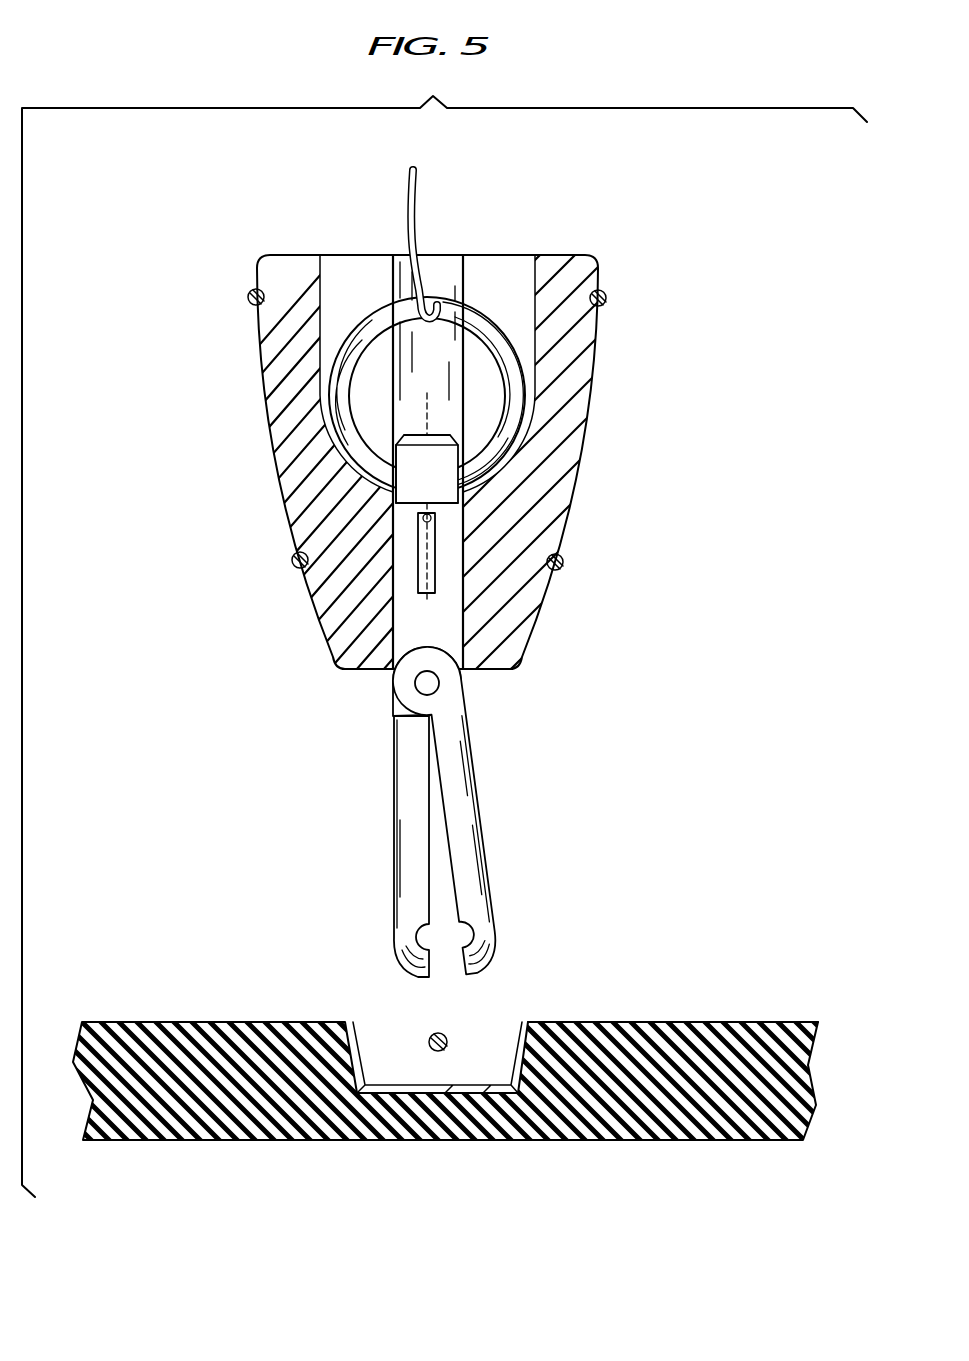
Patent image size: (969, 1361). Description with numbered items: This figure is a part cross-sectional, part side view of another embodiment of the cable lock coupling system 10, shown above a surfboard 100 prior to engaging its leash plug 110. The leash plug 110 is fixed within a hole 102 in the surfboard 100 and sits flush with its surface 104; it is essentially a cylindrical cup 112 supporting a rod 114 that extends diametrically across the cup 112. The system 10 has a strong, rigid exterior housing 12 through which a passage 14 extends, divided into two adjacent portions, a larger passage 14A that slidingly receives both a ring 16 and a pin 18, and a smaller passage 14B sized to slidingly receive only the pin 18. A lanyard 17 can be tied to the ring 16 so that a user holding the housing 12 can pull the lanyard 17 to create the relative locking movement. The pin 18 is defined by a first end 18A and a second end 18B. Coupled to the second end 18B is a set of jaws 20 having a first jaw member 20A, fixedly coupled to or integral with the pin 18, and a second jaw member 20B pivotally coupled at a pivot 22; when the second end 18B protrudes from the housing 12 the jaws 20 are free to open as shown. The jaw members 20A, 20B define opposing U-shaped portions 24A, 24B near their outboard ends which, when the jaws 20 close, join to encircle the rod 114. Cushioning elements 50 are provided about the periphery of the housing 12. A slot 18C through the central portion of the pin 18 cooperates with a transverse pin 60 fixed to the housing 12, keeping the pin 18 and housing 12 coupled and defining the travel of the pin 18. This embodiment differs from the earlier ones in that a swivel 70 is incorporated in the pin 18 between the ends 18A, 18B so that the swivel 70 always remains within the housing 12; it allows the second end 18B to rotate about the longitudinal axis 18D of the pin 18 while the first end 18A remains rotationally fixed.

The cable lock coupling system 10 is at (706, 376).
The exterior housing 12 is at (596, 355).
The passage 14 is at (525, 443).
The passage portion 14A is at (530, 262).
The passage portion 14B is at (466, 576).
The ring 16 is at (388, 305).
The lanyard 17 is at (417, 217).
The pin 18 is at (400, 540).
The first end 18A is at (410, 486).
The second end 18B is at (392, 651).
The slot 18C is at (392, 606).
The longitudinal axis 18D is at (418, 500).
The jaws 20 is at (527, 736).
The first jaw member 20A is at (399, 812).
The second jaw member 20B is at (474, 811).
The pivot 22 is at (422, 686).
The U-shaped portion 24A is at (398, 929).
The U-shaped portion 24B is at (479, 952).
The cushioning elements 50 is at (249, 296).
The transverse pin 60 is at (433, 517).
The swivel 70 is at (395, 612).
The surfboard 100 is at (702, 970).
The hole 102 is at (537, 1073).
The surface 104 is at (602, 1022).
The leash plug 110 is at (403, 1094).
The cylindrical cup 112 is at (344, 1022).
The rod 114 is at (448, 1034).